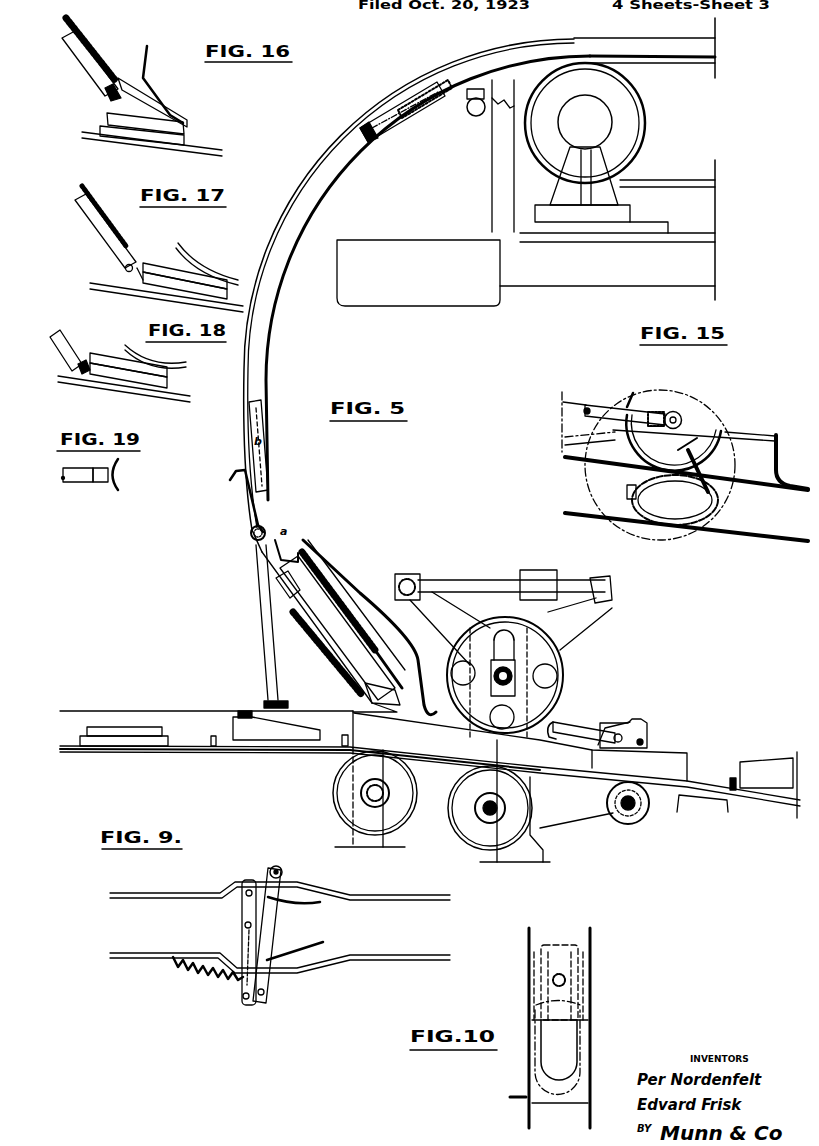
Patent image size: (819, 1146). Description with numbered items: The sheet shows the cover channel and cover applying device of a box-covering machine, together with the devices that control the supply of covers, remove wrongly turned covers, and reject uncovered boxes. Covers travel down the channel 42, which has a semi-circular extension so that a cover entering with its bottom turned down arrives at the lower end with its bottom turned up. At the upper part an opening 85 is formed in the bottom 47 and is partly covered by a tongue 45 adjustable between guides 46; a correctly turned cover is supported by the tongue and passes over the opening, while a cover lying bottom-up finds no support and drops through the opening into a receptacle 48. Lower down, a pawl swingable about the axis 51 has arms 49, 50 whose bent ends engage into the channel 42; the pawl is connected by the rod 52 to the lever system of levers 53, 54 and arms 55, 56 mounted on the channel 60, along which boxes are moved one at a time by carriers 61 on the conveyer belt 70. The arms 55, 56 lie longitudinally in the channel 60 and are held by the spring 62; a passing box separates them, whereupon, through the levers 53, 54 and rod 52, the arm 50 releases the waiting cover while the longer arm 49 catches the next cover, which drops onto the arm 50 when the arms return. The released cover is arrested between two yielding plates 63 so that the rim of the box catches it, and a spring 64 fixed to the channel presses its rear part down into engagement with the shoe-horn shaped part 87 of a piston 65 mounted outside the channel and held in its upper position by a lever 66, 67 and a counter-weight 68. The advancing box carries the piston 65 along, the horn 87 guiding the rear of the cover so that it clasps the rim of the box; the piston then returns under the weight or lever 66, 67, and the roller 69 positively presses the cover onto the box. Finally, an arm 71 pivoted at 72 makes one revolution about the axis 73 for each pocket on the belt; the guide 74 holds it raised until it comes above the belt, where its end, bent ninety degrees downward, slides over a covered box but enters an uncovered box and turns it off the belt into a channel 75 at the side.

In FIG. 5, the cover channel 42 is at (560, 52).
In FIG. 5, the tongue 45 is at (440, 100).
In FIG. 10, the tongue 45 is at (568, 1048).
In FIG. 5, the guides 46 is at (472, 100).
In FIG. 10, the guides 46 is at (541, 987).
In FIG. 5, the bottom of the channel 47 is at (352, 168).
In FIG. 5, the receptacle 48 is at (376, 258).
In FIG. 5, the arm of the pawl 49 is at (243, 508).
In FIG. 5, the arm of the pawl 50 is at (280, 556).
In FIG. 5, the axis 51 is at (250, 533).
In FIG. 5, the rod 52 is at (262, 583).
In FIG. 9, the rod 52 is at (281, 869).
In FIG. 5, the lever 53 is at (268, 699).
In FIG. 9, the lever 53 is at (271, 893).
In FIG. 5, the lever 54 is at (238, 714).
In FIG. 9, the lever 54 is at (247, 912).
In FIG. 5, the arm 55 is at (215, 744).
In FIG. 9, the arm 55 is at (320, 902).
In FIG. 9, the arm 56 is at (323, 942).
In FIG. 5, the channel 60 is at (137, 723).
In FIG. 15, the channel 60 is at (795, 490).
In FIG. 9, the channel 60 is at (162, 953).
In FIG. 16, the carriers 61 is at (100, 130).
In FIG. 17, the carriers 61 is at (182, 281).
In FIG. 18, the carriers 61 is at (128, 370).
In FIG. 5, the carriers 61 is at (207, 740).
In FIG. 15, the carriers 61 is at (627, 493).
In FIG. 9, the spring 62 is at (205, 970).
In FIG. 5, the yielding plates 63 is at (353, 740).
In FIG. 16, the spring 64 is at (148, 55).
In FIG. 5, the spring 64 is at (347, 605).
In FIG. 16, the piston 65 is at (90, 63).
In FIG. 17, the piston 65 is at (106, 232).
In FIG. 18, the piston 65 is at (57, 350).
In FIG. 19, the piston 65 is at (78, 478).
In FIG. 5, the piston 65 is at (350, 677).
In FIG. 5, the lever 66 is at (388, 593).
In FIG. 5, the lever 67 is at (437, 586).
In FIG. 5, the counter-weight 68 is at (541, 584).
In FIG. 17, the roller 69 is at (196, 267).
In FIG. 18, the roller 69 is at (126, 352).
In FIG. 5, the roller 69 is at (490, 628).
In FIG. 16, the conveyer belt 70 is at (102, 139).
In FIG. 17, the conveyer belt 70 is at (166, 297).
In FIG. 18, the conveyer belt 70 is at (124, 389).
In FIG. 5, the conveyer belt 70 is at (247, 753).
In FIG. 15, the conveyer belt 70 is at (686, 499).
In FIG. 5, the arm 71 is at (570, 723).
In FIG. 15, the arm 71 is at (590, 407).
In FIG. 5, the pivot 72 is at (643, 742).
In FIG. 15, the pivot 72 is at (670, 413).
In FIG. 5, the axis 73 is at (637, 722).
In FIG. 15, the axis 73 is at (680, 415).
In FIG. 5, the guide 74 is at (602, 726).
In FIG. 15, the guide 74 is at (644, 382).
In FIG. 5, the channel 75 is at (700, 797).
In FIG. 15, the channel 75 is at (739, 443).
In FIG. 5, the opening 85 is at (374, 135).
In FIG. 10, the opening 85 is at (575, 1092).
In FIG. 16, the shoe-horn shaped part 87 is at (108, 93).
In FIG. 17, the shoe-horn shaped part 87 is at (124, 268).
In FIG. 19, the shoe-horn shaped part 87 is at (103, 478).